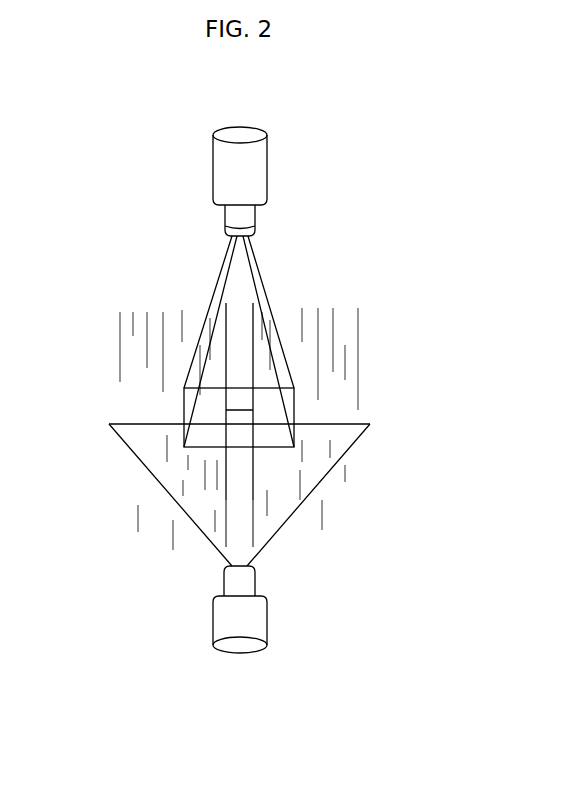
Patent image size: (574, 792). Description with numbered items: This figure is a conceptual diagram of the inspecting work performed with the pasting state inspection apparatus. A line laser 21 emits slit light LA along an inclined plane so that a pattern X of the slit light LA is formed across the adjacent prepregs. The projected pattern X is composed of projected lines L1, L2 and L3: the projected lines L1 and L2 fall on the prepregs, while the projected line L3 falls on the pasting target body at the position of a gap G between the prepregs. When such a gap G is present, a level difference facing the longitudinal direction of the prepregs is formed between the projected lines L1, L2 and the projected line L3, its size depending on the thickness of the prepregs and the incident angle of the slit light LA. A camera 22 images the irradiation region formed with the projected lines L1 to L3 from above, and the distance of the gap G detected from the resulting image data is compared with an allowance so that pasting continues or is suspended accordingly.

The camera 22 is at (252, 170).
The laser 21 is at (250, 620).
The pattern X is at (320, 424).
The projected line L1 is at (342, 424).
The projected line L2 is at (128, 424).
The projected line L3 is at (238, 408).
The gap G is at (240, 518).
The slit light LA is at (270, 540).